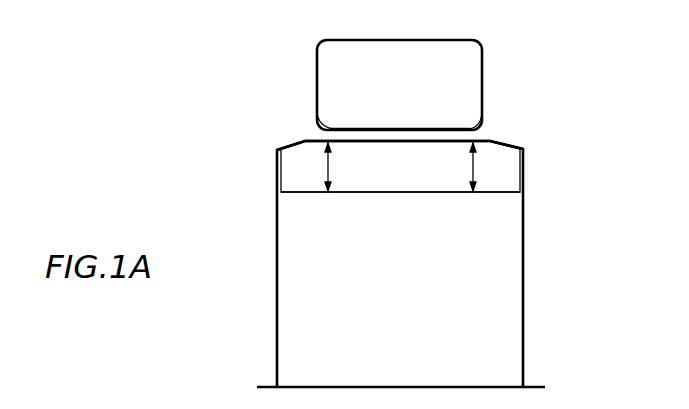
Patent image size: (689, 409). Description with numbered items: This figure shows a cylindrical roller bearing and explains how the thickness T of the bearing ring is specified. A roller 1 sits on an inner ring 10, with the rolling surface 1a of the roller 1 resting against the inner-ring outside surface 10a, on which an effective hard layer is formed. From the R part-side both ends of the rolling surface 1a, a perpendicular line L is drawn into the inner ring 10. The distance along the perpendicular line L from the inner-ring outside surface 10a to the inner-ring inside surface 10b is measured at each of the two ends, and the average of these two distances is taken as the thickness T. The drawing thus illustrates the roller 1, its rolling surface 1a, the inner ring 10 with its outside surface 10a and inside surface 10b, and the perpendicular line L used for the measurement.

The roller 1 is at (385, 60).
The rolling surface 1a is at (387, 128).
The inner ring 10 is at (303, 168).
The inner-ring outside surface 10a is at (413, 143).
The inner-ring inside surface 10b is at (335, 194).
The perpendicular line L is at (410, 167).